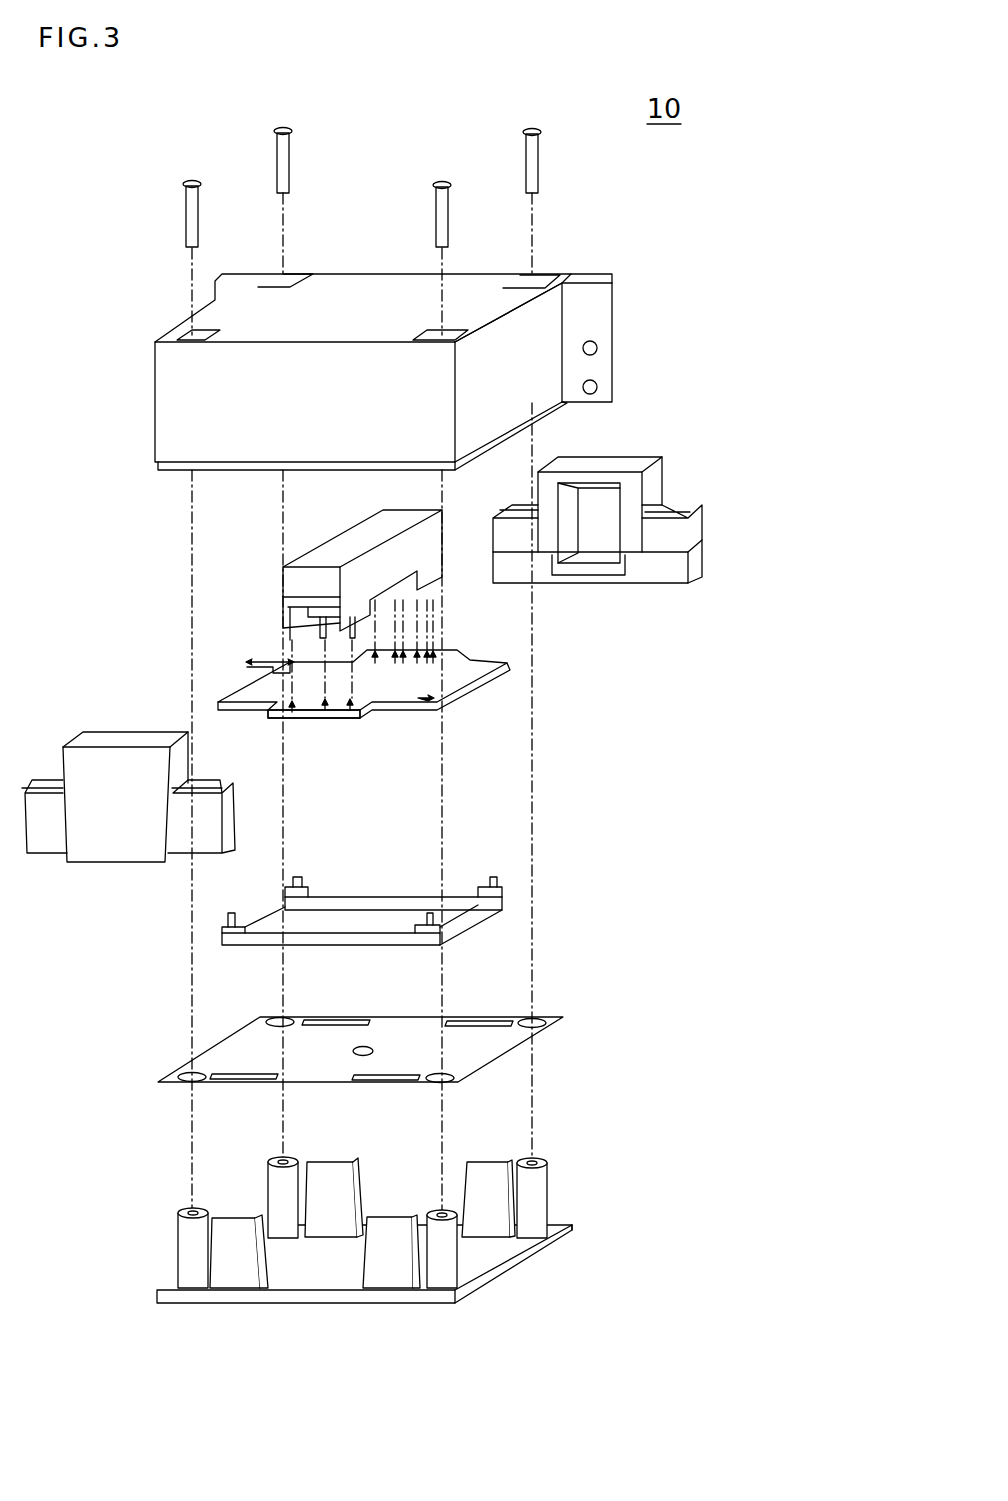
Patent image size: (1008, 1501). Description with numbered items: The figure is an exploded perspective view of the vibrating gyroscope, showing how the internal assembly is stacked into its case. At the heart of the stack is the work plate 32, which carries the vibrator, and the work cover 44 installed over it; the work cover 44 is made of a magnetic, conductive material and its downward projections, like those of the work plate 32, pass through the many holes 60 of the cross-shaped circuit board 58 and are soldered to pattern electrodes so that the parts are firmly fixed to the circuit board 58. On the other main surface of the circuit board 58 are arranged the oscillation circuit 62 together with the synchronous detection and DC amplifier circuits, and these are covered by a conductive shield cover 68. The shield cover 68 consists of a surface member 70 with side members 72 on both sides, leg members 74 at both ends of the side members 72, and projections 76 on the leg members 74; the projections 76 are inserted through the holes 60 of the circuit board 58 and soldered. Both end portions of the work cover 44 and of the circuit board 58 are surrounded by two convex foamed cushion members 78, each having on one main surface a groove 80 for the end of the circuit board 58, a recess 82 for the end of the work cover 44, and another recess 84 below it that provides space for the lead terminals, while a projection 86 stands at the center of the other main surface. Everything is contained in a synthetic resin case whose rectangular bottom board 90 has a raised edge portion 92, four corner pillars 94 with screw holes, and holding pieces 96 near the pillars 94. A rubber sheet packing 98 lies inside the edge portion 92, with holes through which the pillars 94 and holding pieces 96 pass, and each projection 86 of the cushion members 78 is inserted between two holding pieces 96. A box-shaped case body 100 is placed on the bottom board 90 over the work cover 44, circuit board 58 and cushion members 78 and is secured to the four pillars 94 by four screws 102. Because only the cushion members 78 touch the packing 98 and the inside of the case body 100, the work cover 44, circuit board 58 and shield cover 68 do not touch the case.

The work plate 32 is at (314, 598).
The work cover 44 is at (362, 559).
The circuit board 58 is at (354, 686).
The holes 60 is at (232, 698).
The oscillation circuit 62 is at (367, 722).
The shield cover 68 is at (363, 905).
The surface member 70 is at (363, 899).
The side members 72 is at (372, 903).
The leg members 74 is at (303, 897).
The projections 76 is at (297, 877).
The cushion members 78 is at (608, 518).
The groove 80 is at (668, 557).
The recess 82 is at (607, 539).
The recess 84 is at (598, 560).
The projection 86 is at (98, 732).
The bottom board 90 is at (397, 1264).
The edge portion 92 is at (568, 1237).
The pillars 94 is at (279, 1190).
The holding pieces 96 is at (335, 1178).
The packing 98 is at (481, 1056).
The case body 100 is at (334, 372).
The screws 102 is at (290, 166).